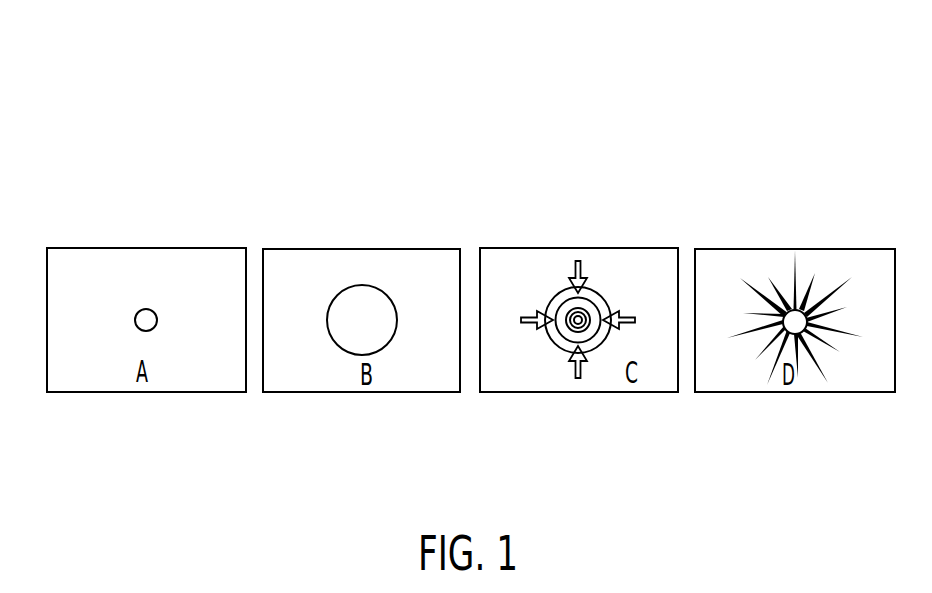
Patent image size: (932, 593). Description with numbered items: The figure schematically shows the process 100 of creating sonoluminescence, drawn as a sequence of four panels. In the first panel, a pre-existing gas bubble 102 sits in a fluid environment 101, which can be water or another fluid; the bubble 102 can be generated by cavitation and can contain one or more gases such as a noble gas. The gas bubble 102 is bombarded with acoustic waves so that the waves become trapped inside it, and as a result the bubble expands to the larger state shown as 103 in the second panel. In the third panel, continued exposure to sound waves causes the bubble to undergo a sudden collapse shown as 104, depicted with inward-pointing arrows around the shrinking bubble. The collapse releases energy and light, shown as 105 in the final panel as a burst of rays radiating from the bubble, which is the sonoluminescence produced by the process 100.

The process 100 is at (128, 107).
The fluid environment 101 is at (82, 267).
The gas bubble 102 is at (147, 308).
The expanded state 103 is at (373, 350).
The sudden collapse 104 is at (585, 314).
The released energy and light 105 is at (820, 343).